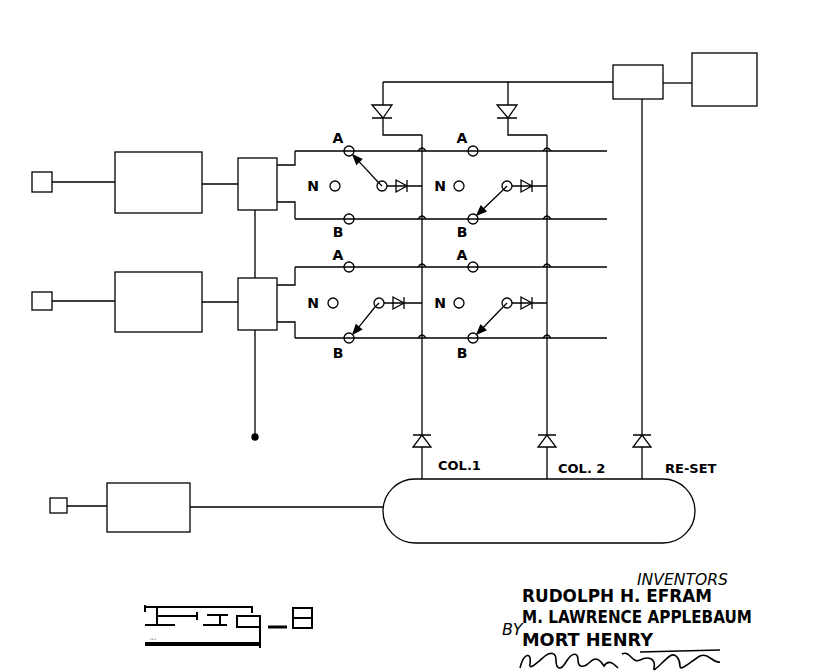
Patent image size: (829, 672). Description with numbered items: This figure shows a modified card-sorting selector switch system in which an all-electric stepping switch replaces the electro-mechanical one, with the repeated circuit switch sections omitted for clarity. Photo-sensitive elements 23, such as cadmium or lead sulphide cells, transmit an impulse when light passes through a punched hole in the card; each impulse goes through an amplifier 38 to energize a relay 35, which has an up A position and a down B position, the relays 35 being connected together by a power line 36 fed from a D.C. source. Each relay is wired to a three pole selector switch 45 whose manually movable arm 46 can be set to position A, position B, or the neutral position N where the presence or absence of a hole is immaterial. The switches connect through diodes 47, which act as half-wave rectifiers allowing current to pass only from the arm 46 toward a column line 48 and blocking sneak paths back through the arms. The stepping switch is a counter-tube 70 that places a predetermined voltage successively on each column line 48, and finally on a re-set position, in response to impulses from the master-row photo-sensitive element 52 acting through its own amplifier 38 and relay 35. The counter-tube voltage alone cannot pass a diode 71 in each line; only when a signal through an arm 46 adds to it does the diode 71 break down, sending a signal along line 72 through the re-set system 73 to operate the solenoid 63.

The photo-sensitive element 23 is at (48, 178).
The amplifier 38 is at (147, 157).
The relay 35 is at (255, 165).
The power line 36 is at (254, 416).
The photo-sensitive element 52 is at (60, 499).
The line 72 is at (477, 82).
The diode 71 is at (373, 110).
The re-set system 73 is at (628, 72).
The solenoid 63 is at (712, 60).
The column line 48 is at (425, 406).
The counter-tube 70 is at (420, 530).
The three pole selector switch 45 is at (367, 194).
The switch arm 46 is at (368, 174).
The diode 47 is at (403, 194).